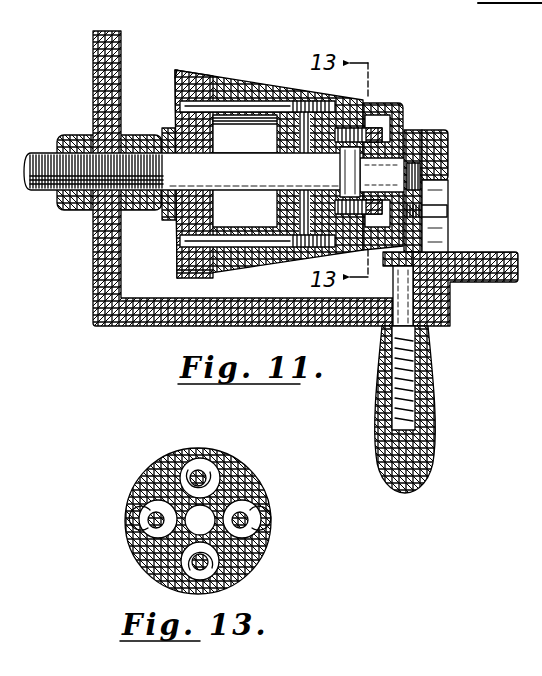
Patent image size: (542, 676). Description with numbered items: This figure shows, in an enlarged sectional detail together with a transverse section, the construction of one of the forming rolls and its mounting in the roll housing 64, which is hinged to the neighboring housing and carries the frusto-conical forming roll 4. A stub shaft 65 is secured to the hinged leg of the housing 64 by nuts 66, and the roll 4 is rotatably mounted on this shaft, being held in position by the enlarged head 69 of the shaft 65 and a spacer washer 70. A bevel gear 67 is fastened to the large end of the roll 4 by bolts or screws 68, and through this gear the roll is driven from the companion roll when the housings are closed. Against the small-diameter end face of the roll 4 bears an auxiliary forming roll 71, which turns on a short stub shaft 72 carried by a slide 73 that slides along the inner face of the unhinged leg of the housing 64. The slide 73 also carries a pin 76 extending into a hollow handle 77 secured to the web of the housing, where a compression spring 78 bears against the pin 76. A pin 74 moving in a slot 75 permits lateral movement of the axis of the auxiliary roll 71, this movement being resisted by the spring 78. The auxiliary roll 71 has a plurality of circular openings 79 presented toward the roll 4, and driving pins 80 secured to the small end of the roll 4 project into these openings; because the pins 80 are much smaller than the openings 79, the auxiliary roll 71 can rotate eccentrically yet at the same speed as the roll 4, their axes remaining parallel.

In FIG. 11, the frusto-conical forming roll 4 is at (255, 86).
In FIG. 11, the roll housing 64 is at (108, 327).
In FIG. 11, the stub shaft 65 is at (247, 168).
In FIG. 11, the nuts 66 is at (96, 226).
In FIG. 11, the bevel gear 67 is at (196, 74).
In FIG. 11, the bolts or screws 68 is at (266, 258).
In FIG. 11, the enlarged head 69 is at (340, 166).
In FIG. 11, the spacer washer 70 is at (166, 128).
In FIG. 11, the auxiliary forming roll 71 is at (396, 115).
In FIG. 13, the auxiliary forming roll 71 is at (244, 488).
In FIG. 11, the short stub shaft 72 is at (436, 162).
In FIG. 11, the slide 73 is at (416, 134).
In FIG. 11, the pin 74 is at (447, 211).
In FIG. 11, the slot 75 is at (440, 240).
In FIG. 11, the pin 76 is at (397, 286).
In FIG. 11, the hollow handle 77 is at (420, 400).
In FIG. 11, the compression spring 78 is at (412, 354).
In FIG. 11, the circular openings 79 is at (392, 124).
In FIG. 13, the circular openings 79 is at (185, 470).
In FIG. 11, the driving pins 80 is at (375, 128).
In FIG. 13, the driving pins 80 is at (203, 474).